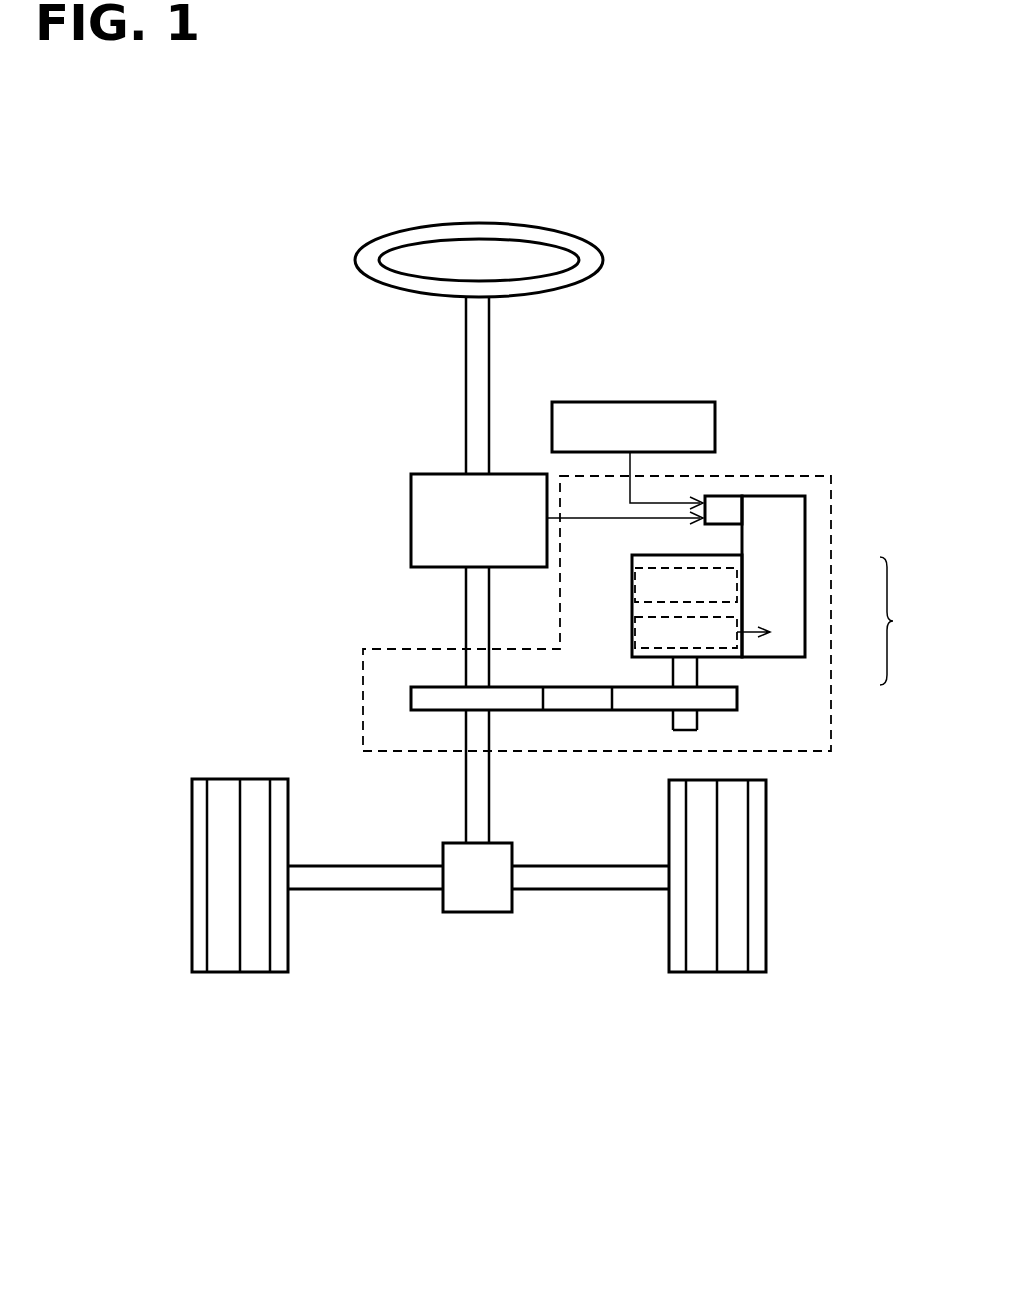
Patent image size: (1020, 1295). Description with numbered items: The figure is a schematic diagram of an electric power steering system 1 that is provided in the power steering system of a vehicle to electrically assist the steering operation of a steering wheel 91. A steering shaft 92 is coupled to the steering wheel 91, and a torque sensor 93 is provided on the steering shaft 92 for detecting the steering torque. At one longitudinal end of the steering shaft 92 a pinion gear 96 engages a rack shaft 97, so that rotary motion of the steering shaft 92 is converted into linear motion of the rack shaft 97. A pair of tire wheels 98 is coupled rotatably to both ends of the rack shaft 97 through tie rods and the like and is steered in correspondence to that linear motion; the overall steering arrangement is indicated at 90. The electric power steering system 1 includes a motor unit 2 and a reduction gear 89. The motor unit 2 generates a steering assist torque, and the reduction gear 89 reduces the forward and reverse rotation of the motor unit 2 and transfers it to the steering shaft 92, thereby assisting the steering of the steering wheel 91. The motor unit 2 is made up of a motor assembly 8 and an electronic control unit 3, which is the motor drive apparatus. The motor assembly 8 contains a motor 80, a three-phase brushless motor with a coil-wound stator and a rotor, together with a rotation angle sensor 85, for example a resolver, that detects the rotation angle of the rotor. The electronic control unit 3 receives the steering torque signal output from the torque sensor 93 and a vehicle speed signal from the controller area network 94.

The electric power steering system 1 is at (831, 505).
The motor unit 2 is at (895, 621).
The electronic control unit (ECU) 3 is at (805, 570).
The motor assembly 8 is at (725, 657).
The motor 80 is at (636, 582).
The rotation angle sensor 85 is at (636, 628).
The reduction gear 89 is at (737, 695).
The steering system 90 is at (433, 1062).
The steering wheel 91 is at (356, 259).
The steering shaft 92 is at (466, 360).
The torque sensor 93 is at (411, 525).
The controller area network (CAN) 94 is at (626, 402).
The pinion gear 96 is at (468, 912).
The rack shaft 97 is at (358, 890).
The tire wheels 98 is at (258, 972).